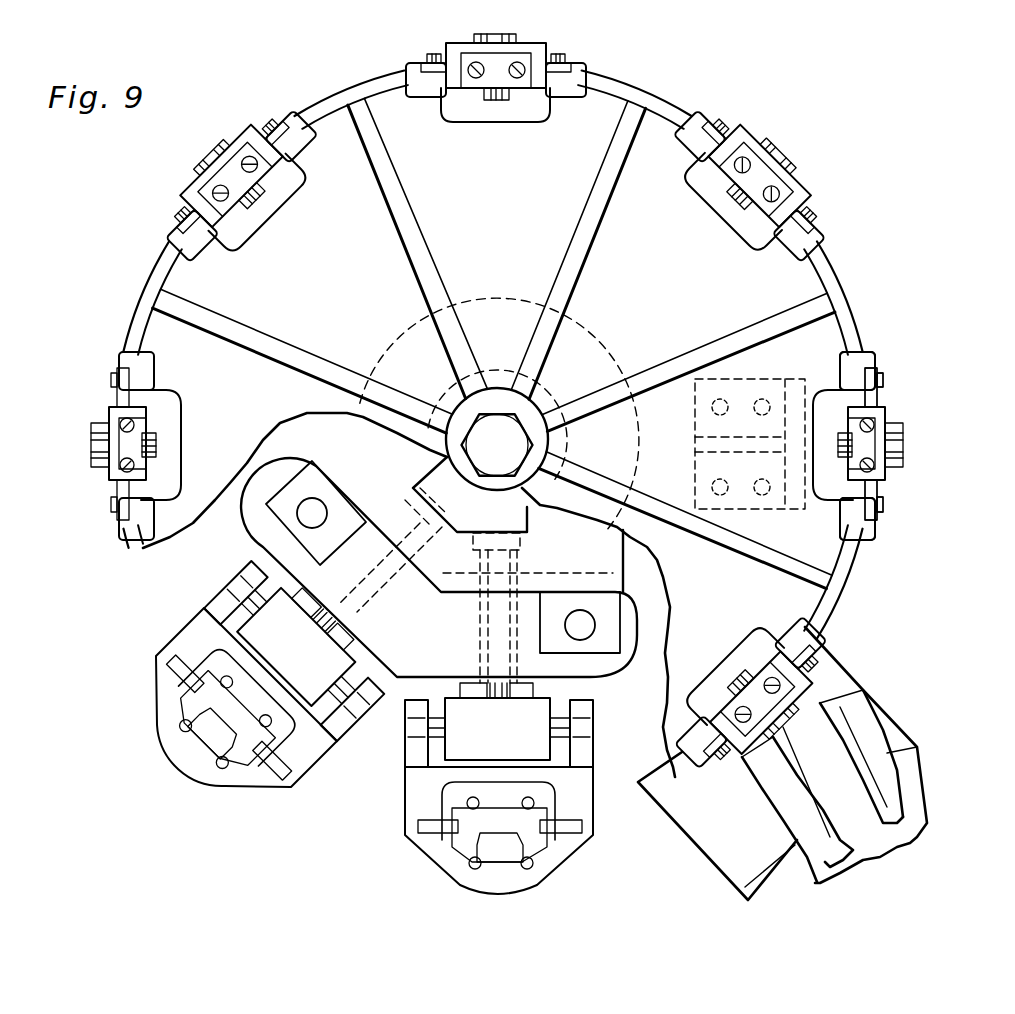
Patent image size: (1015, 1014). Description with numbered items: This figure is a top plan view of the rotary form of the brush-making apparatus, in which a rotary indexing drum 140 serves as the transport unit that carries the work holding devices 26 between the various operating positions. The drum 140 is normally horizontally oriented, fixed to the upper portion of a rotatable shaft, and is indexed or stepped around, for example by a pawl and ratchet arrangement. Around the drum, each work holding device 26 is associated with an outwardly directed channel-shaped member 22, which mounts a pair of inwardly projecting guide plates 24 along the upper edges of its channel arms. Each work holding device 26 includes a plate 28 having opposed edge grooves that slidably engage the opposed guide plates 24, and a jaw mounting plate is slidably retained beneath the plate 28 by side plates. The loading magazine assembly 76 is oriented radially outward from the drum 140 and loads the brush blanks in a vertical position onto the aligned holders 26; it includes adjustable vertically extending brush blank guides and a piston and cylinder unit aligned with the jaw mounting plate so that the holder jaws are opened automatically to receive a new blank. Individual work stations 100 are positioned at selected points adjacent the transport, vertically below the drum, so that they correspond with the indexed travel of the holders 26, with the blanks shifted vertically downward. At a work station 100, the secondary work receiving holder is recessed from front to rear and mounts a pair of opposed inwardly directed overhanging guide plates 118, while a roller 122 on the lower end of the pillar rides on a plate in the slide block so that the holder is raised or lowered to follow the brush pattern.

The rotary indexing drum 140 is at (676, 93).
The work holding device 26 is at (534, 411).
The channel-shaped member 22 is at (852, 360).
The guide plate 24 is at (870, 378).
The plate 28 is at (886, 489).
The loading magazine assembly 76 is at (893, 710).
The work station 100 is at (398, 823).
The guide plate 118 is at (568, 828).
The roller 122 is at (537, 546).